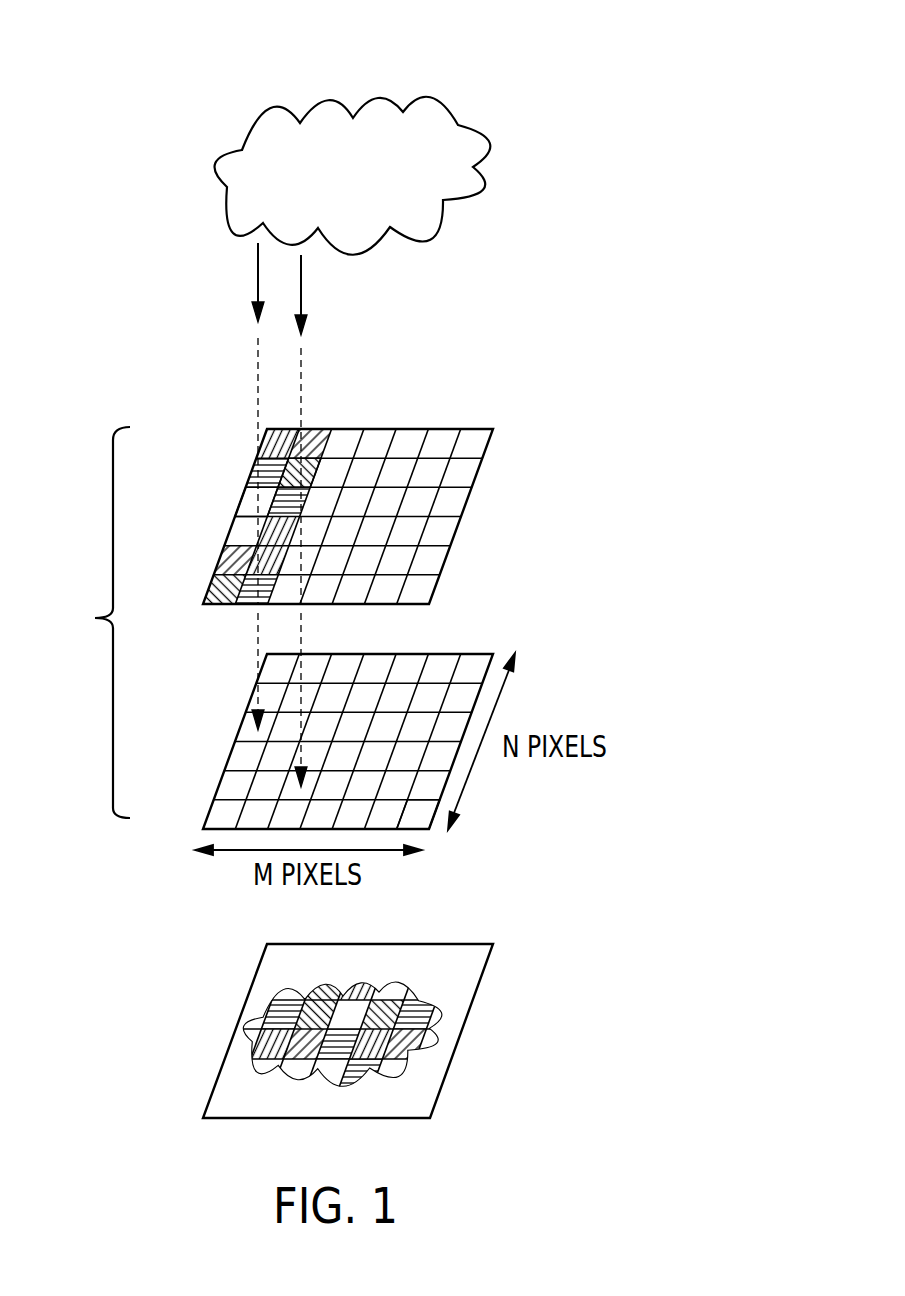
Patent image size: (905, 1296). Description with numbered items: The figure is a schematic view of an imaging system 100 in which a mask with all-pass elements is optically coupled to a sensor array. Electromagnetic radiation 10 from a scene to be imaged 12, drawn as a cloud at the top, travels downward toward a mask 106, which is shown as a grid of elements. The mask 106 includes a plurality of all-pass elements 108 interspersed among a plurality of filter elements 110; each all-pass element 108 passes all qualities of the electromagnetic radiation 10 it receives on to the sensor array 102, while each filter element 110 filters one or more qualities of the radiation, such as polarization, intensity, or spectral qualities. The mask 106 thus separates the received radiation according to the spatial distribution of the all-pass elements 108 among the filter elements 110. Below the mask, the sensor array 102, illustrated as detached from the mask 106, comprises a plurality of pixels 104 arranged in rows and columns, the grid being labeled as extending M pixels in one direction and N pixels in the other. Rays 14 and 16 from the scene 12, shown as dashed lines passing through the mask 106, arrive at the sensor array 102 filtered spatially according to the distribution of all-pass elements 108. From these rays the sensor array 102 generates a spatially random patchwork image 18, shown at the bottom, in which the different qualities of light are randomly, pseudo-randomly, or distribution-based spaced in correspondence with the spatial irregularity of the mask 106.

The electromagnetic radiation 10 is at (318, 291).
The scene to be imaged 12 is at (404, 78).
The ray 14 is at (260, 620).
The ray 16 is at (300, 633).
The spatially random patchwork image 18 is at (490, 1031).
The imaging system 100 is at (88, 622).
The sensor array 102 is at (478, 655).
The pixel 104 is at (420, 813).
The mask 106 is at (448, 429).
The all-pass element 108 is at (248, 506).
The filter element 110 is at (307, 468).